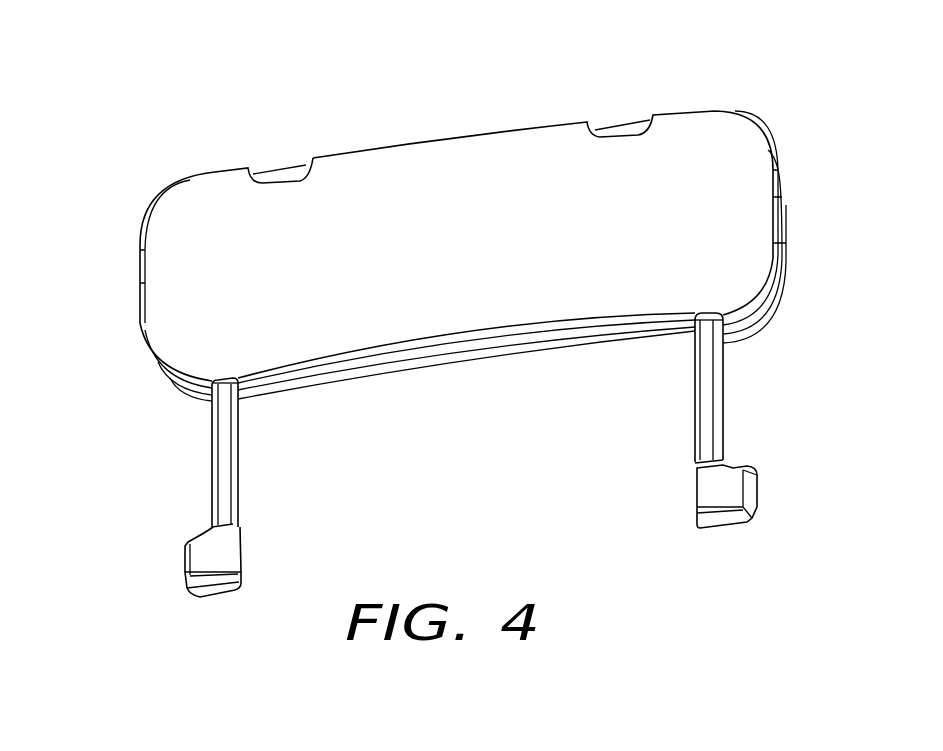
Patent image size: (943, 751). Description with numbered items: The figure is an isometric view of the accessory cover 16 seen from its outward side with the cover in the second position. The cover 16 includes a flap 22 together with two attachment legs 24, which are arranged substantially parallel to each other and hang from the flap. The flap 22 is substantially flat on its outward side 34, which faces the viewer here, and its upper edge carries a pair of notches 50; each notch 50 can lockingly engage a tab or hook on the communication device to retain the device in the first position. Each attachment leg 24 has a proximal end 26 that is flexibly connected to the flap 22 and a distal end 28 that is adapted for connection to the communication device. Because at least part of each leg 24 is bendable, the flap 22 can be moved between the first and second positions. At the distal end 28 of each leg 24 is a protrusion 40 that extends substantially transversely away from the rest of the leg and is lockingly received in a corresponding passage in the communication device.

The cover 16 is at (442, 127).
The flap 22 is at (138, 260).
The outward side 34 is at (785, 203).
The notch 50 is at (282, 167).
The attachment leg 24 is at (239, 468).
The proximal end 26 is at (238, 388).
The distal end 28 is at (241, 557).
The protrusion 40 is at (185, 565).